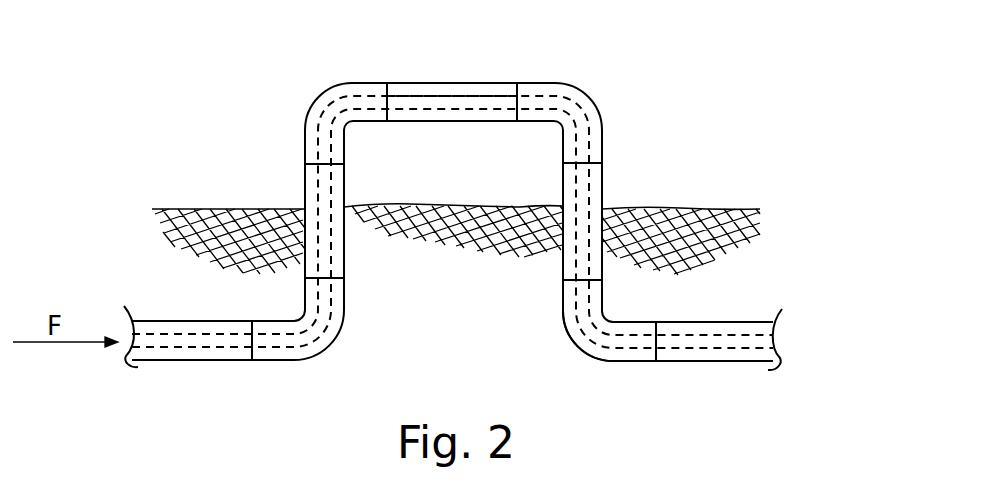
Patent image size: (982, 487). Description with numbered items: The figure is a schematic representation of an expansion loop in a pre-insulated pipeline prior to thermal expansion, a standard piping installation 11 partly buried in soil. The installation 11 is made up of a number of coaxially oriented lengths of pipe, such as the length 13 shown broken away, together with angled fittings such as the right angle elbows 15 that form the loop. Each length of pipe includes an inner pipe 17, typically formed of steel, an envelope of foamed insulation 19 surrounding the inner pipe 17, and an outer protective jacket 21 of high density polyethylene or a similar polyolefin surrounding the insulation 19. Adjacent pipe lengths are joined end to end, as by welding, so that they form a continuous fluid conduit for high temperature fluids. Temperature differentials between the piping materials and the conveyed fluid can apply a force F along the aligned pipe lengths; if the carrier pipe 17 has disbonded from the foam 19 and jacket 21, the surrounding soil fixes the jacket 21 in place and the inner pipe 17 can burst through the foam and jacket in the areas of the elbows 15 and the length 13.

The piping installation 11 is at (606, 88).
The length of pipe 13 is at (747, 322).
The right angle elbow 15 is at (558, 336).
The inner pipe 17 is at (436, 96).
The envelope of foamed insulation 19 is at (487, 90).
The outer protective jacket 21 is at (407, 83).